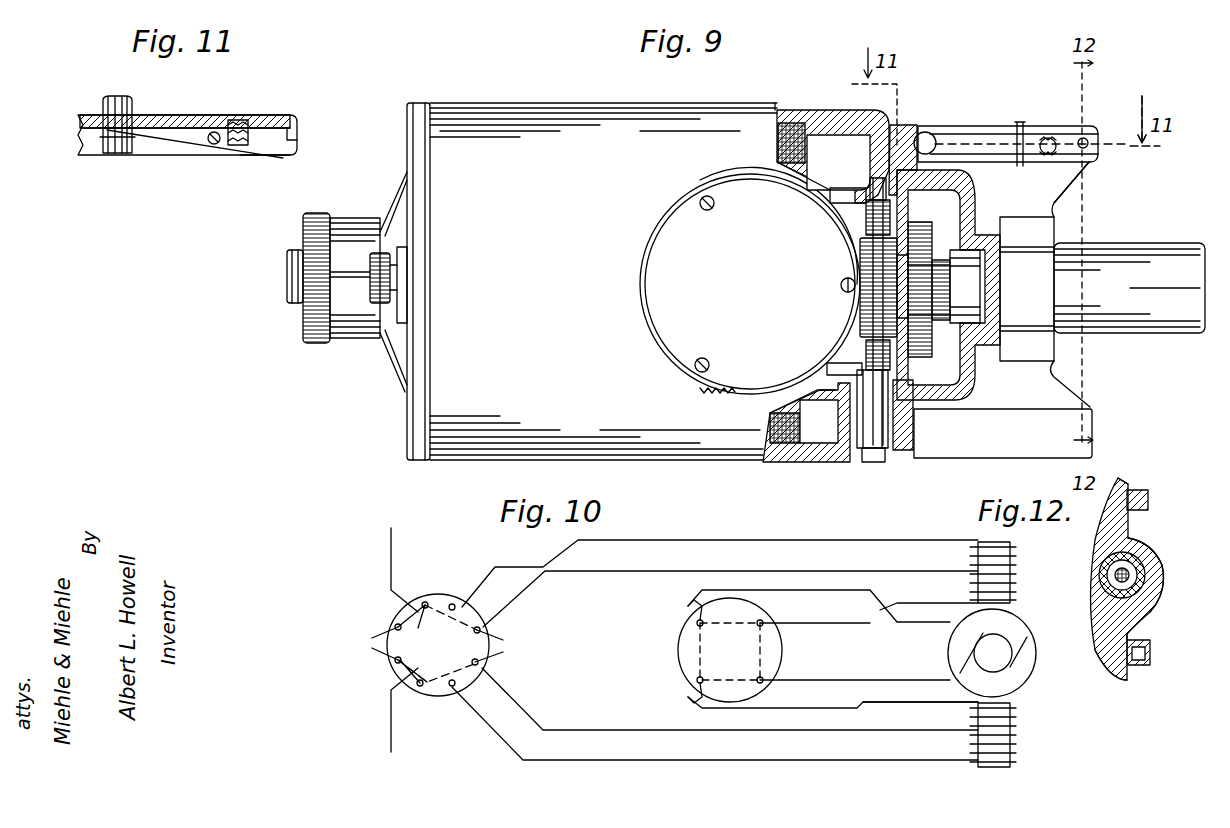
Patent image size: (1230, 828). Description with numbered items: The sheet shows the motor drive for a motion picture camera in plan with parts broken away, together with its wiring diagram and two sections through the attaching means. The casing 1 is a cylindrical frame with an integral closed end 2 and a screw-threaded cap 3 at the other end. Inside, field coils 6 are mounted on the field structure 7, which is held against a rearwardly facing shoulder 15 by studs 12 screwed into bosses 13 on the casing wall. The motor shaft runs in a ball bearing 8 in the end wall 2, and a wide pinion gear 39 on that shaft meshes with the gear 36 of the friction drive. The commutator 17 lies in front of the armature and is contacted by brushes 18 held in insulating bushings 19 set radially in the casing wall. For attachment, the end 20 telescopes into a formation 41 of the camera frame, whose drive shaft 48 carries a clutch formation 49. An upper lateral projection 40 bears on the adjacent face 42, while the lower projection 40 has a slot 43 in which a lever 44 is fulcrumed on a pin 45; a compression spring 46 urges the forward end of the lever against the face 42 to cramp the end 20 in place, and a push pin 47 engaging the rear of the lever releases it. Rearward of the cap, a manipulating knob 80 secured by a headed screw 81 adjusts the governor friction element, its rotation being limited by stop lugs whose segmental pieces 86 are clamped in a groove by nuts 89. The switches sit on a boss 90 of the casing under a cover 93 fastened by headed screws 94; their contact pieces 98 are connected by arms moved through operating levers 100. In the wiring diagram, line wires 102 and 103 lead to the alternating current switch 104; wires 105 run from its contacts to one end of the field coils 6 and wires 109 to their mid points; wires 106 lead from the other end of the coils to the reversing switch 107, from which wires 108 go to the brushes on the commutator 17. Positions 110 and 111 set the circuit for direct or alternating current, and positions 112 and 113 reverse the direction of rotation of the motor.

In FIG. 9, the casing 1 is at (548, 104).
In FIG. 9, the end 2 is at (978, 202).
In FIG. 9, the cap 3 is at (407, 134).
In FIG. 10, the field coils 6 is at (1016, 578).
In FIG. 9, the field structure 7 is at (792, 110).
In FIG. 9, the ball bearing 8 is at (996, 262).
In FIG. 9, the studs 12 is at (830, 150).
In FIG. 9, the bosses 13 is at (870, 185).
In FIG. 9, the shoulder 15 is at (855, 170).
In FIG. 9, the commutator 17 is at (862, 272).
In FIG. 10, the commutator 17 is at (1022, 680).
In FIG. 9, the brushes 18 is at (866, 220).
In FIG. 10, the brushes 18 is at (950, 656).
In FIG. 9, the insulating bushings 19 is at (887, 450).
In FIG. 9, the end 20 is at (1160, 250).
In FIG. 12, the end 20 is at (1165, 578).
In FIG. 9, the gear 36 is at (932, 328).
In FIG. 9, the pinion gear 39 is at (948, 288).
In FIG. 9, the lateral projection 40 is at (993, 126).
In FIG. 11, the lateral projection 40 is at (186, 115).
In FIG. 12, the lateral projection 40 is at (1148, 495).
In FIG. 12, the formation 41 is at (1160, 560).
In FIG. 12, the face 42 is at (1126, 480).
In FIG. 9, the slot 43 is at (1086, 136).
In FIG. 11, the slot 43 is at (294, 128).
In FIG. 12, the slot 43 is at (1150, 655).
In FIG. 9, the lever 44 is at (1078, 168).
In FIG. 11, the lever 44 is at (268, 155).
In FIG. 12, the lever 44 is at (1118, 672).
In FIG. 9, the pin 45 is at (1020, 122).
In FIG. 11, the pin 45 is at (213, 144).
In FIG. 9, the compression spring 46 is at (1050, 136).
In FIG. 11, the compression spring 46 is at (237, 120).
In FIG. 9, the push pin 47 is at (926, 131).
In FIG. 11, the push pin 47 is at (116, 97).
In FIG. 12, the drive shaft 48 is at (1115, 580).
In FIG. 12, the clutch formation 49 is at (1110, 568).
In FIG. 9, the manipulating knob 80 is at (303, 312).
In FIG. 9, the headed screw 81 is at (287, 272).
In FIG. 9, the segmental piece 86 is at (397, 318).
In FIG. 9, the nut 89 is at (372, 256).
In FIG. 9, the boss 90 is at (642, 305).
In FIG. 9, the top or cover 93 is at (652, 254).
In FIG. 9, the headed screws 94 is at (707, 212).
In FIG. 10, the contact pieces 98 is at (437, 644).
In FIG. 9, the operating levers 100 is at (718, 387).
In FIG. 10, the line wire 102 is at (391, 568).
In FIG. 10, the line wire 103 is at (391, 724).
In FIG. 10, the alternating current switch 104 is at (438, 595).
In FIG. 10, the wires 105 is at (676, 540).
In FIG. 10, the wires 106 is at (920, 603).
In FIG. 10, the reversing switch 107 is at (678, 650).
In FIG. 10, the wires 108 is at (838, 622).
In FIG. 10, the wires 109 is at (664, 571).
In FIG. 10, the direct current position 110 is at (455, 610).
In FIG. 10, the alternating current position 111 is at (424, 604).
In FIG. 10, the forward rotation position 112 is at (698, 660).
In FIG. 10, the reverse rotation position 113 is at (694, 603).